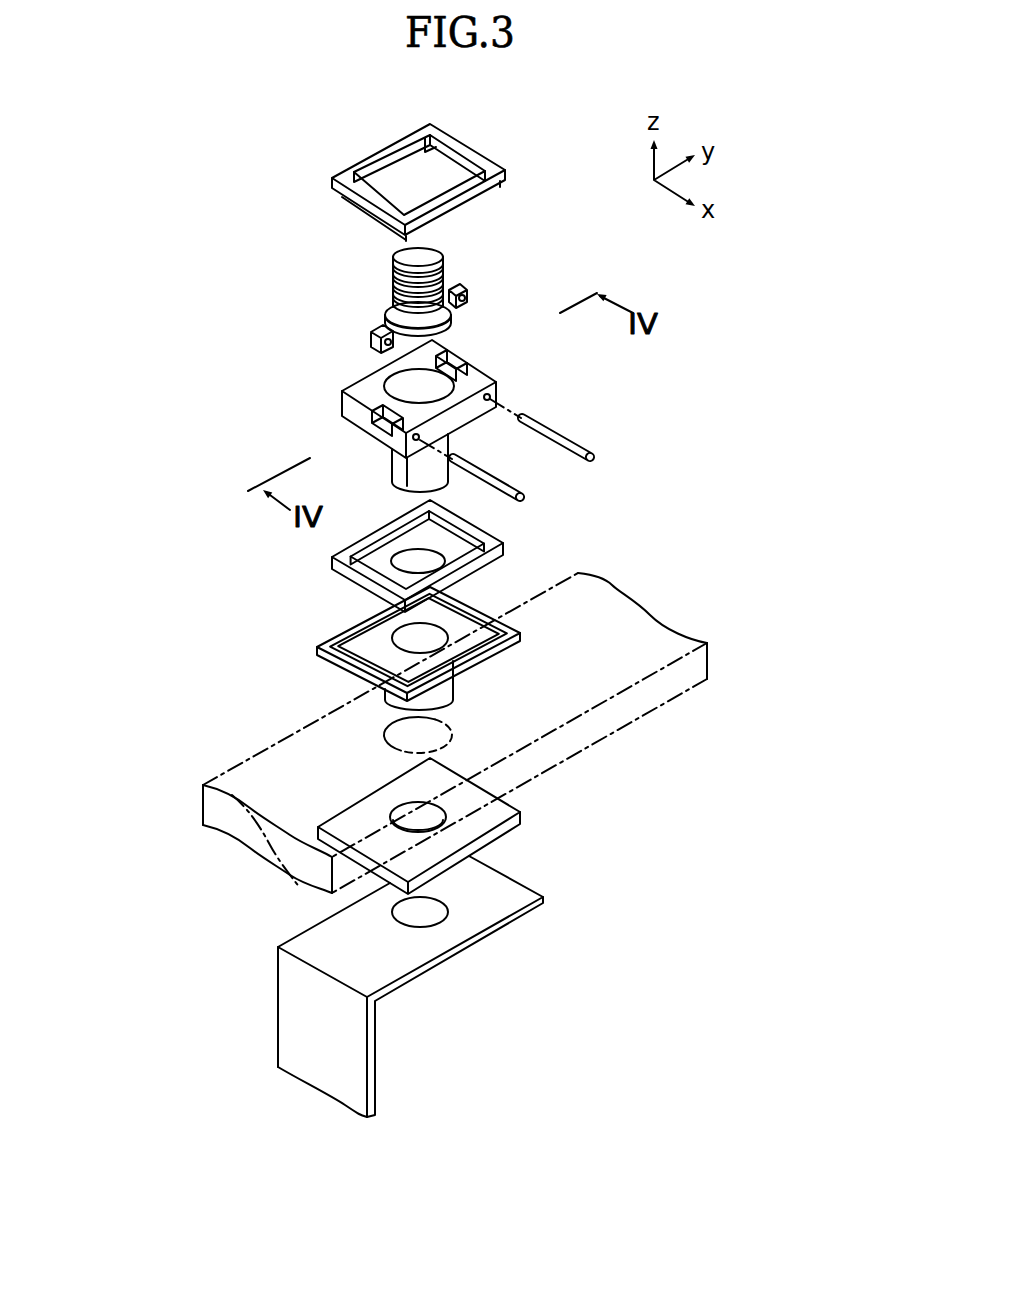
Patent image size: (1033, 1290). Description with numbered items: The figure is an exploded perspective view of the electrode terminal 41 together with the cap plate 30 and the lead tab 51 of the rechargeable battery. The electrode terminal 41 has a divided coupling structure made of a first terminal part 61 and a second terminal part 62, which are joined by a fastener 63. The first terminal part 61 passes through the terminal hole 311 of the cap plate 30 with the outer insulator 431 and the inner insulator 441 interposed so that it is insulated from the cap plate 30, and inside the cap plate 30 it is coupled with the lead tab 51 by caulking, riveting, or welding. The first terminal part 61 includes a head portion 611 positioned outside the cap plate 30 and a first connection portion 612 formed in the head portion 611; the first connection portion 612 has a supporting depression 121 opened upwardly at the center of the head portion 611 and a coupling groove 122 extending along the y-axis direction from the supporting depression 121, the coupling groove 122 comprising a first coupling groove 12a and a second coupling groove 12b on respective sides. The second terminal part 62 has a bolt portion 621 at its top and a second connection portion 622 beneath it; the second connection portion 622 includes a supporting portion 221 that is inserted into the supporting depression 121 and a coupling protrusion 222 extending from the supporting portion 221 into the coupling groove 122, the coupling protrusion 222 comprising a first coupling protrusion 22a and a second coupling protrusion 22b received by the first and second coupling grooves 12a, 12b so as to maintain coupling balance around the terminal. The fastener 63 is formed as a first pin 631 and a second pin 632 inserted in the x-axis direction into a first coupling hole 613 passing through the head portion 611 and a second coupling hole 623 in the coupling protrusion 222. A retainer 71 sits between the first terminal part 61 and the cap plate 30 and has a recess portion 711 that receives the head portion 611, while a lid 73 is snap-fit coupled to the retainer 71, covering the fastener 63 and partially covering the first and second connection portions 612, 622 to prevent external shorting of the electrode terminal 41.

The electrode terminal 41 is at (298, 127).
The lid 73 is at (480, 138).
The second terminal part 62 is at (385, 295).
The bolt portion 621 is at (397, 270).
The second connection portion 622 is at (385, 320).
The supporting portion 221 is at (392, 303).
The coupling protrusion 222 is at (379, 320).
The first coupling protrusion 22a is at (385, 348).
The second coupling protrusion 22b is at (470, 296).
The second coupling hole 623 is at (440, 316).
The first terminal part 61 is at (353, 410).
The first connection portion 612 is at (329, 401).
The supporting depression 121 is at (370, 375).
The coupling groove 122 is at (329, 401).
The first coupling groove 12a is at (385, 428).
The second coupling groove 12b is at (487, 368).
The head portion 611 is at (388, 441).
The first coupling hole 613 is at (487, 401).
The fastener 63 is at (578, 480).
The first pin 631 is at (518, 490).
The second pin 632 is at (606, 449).
The retainer 71 is at (419, 563).
The recess portion 711 is at (382, 568).
The outer insulator 431 is at (330, 655).
The cap plate 30 is at (465, 733).
The terminal hole 311 is at (393, 742).
The inner insulator 441 is at (522, 812).
The lead tab 51 is at (483, 910).